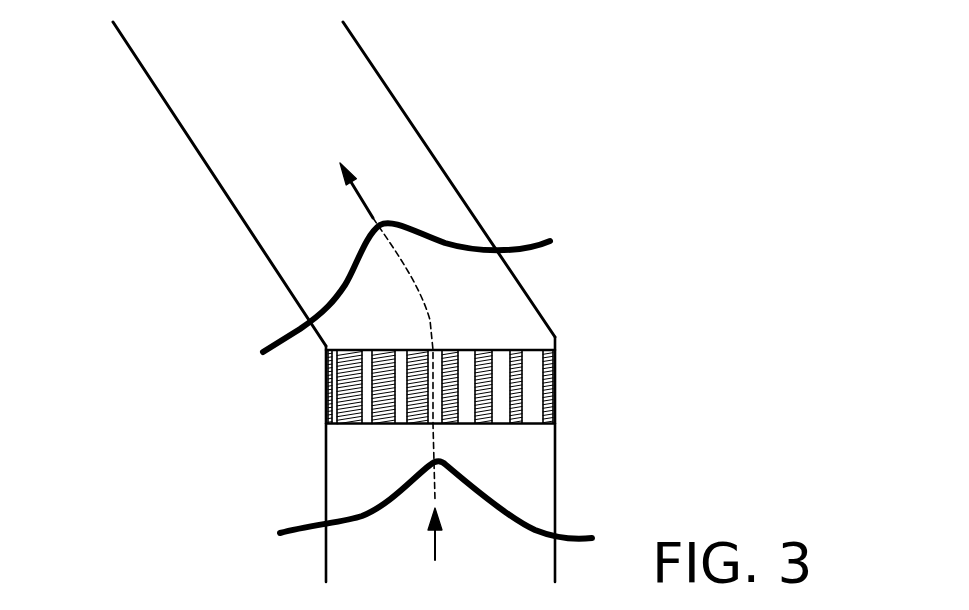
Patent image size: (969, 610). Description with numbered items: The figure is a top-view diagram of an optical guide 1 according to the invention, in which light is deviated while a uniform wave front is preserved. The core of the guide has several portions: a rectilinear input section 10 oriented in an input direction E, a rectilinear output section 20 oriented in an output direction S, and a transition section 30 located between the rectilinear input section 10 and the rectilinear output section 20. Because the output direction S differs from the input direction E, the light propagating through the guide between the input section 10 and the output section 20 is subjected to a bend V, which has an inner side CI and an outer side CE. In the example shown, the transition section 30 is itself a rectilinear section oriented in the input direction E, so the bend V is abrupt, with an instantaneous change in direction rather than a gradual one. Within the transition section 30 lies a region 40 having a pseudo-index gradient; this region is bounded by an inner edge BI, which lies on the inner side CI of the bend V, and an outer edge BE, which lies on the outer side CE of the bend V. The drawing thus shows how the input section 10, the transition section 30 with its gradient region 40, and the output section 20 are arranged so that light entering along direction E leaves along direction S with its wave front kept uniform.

The optical guide 1 is at (550, 154).
The rectilinear input section 10 is at (350, 553).
The rectilinear output section 20 is at (362, 98).
The transition section 30 is at (449, 422).
The region with a pseudo-index gradient 40 is at (380, 407).
The output direction S is at (356, 191).
The input direction E is at (436, 537).
The bend V is at (430, 322).
The outer side CE is at (423, 288).
The inner side CI is at (402, 298).
The outer edge BE is at (555, 388).
The inner edge BI is at (325, 390).